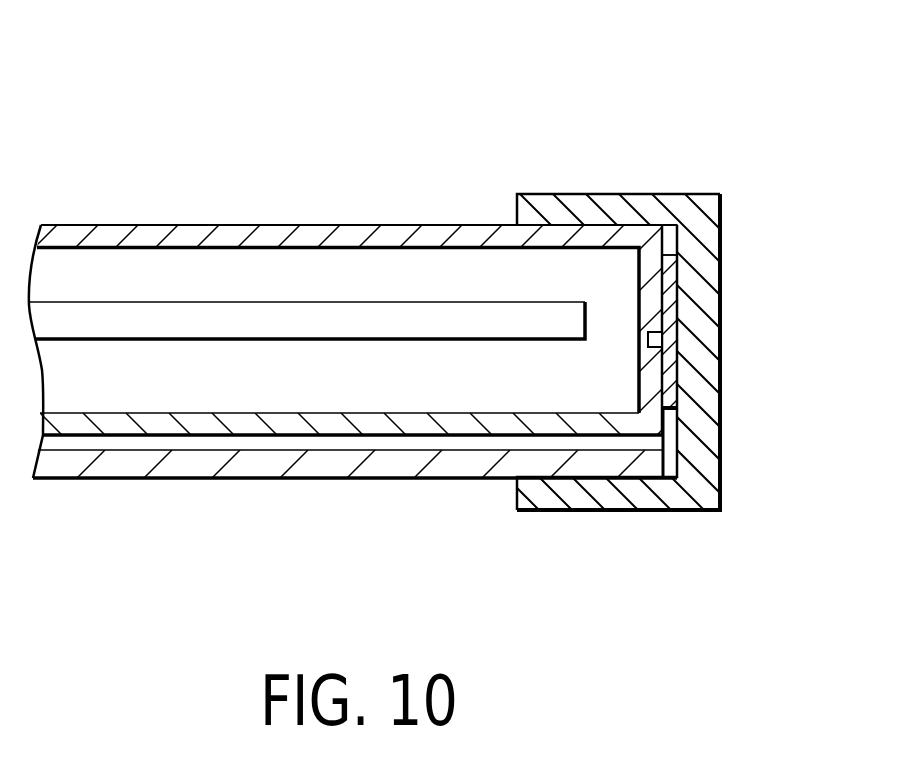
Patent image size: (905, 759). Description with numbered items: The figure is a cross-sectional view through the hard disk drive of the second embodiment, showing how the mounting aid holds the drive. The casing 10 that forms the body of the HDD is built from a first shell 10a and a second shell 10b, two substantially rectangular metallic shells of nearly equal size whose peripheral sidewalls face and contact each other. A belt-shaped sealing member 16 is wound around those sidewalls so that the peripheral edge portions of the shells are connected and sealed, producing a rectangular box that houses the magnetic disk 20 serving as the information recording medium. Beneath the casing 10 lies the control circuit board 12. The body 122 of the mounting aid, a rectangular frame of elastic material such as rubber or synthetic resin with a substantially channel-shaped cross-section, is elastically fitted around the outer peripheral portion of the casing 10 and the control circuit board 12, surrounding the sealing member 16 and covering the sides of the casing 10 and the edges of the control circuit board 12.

The casing 10 is at (180, 172).
The first shell 10a is at (466, 422).
The second shell 10b is at (430, 232).
The control circuit board 12 is at (229, 462).
The sealing member 16 is at (670, 298).
The magnetic disk 20 is at (315, 315).
The body 122 is at (723, 393).